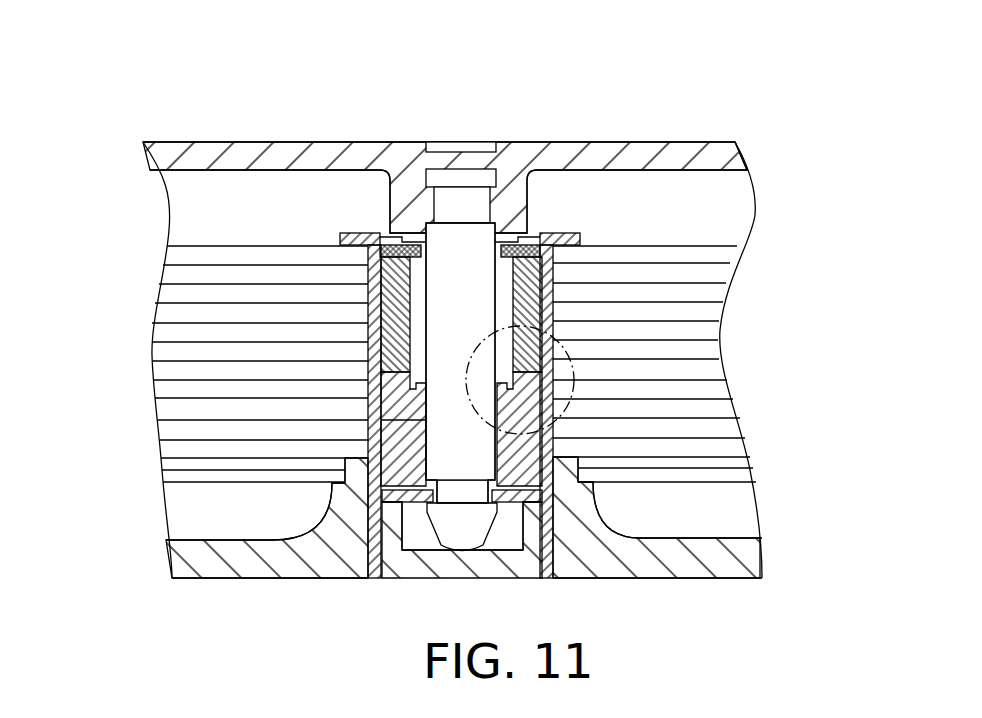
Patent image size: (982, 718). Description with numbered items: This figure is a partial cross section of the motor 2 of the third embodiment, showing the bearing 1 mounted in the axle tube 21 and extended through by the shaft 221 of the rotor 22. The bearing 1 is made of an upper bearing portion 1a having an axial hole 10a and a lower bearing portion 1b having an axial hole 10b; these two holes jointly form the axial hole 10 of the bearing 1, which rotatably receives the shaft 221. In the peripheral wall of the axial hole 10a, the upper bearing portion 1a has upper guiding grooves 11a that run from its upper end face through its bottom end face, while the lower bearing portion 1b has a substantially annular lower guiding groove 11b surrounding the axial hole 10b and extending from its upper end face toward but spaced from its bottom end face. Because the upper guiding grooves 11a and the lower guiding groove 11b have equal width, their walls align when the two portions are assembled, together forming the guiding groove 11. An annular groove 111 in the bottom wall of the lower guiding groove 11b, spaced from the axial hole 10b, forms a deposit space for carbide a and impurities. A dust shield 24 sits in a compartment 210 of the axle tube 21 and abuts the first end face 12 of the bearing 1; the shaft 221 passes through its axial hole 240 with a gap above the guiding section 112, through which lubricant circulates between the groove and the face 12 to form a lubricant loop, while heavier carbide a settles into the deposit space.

The bearing 1 is at (837, 282).
The upper bearing portion 1a is at (560, 284).
The lower bearing portion 1b is at (555, 448).
The motor 2 is at (363, 133).
The axial hole 10 is at (83, 244).
The axial hole of the upper bearing portion 10a is at (372, 273).
The axial hole of the lower bearing portion 10b is at (400, 410).
The guiding groove 11 is at (508, 67).
The upper guiding groove 11a is at (501, 262).
The lower guiding groove 11b is at (486, 345).
The first end face 12 is at (400, 233).
The axle tube 21 is at (555, 560).
The rotor 22 is at (172, 142).
The dust shield 24 is at (382, 234).
The annular groove (deposit space) 111 is at (553, 388).
The guiding section 112 is at (528, 236).
The compartment 210 is at (541, 234).
The shaft 221 is at (458, 245).
The axial hole of the dust shield 240 is at (390, 244).
The carbide a is at (408, 392).